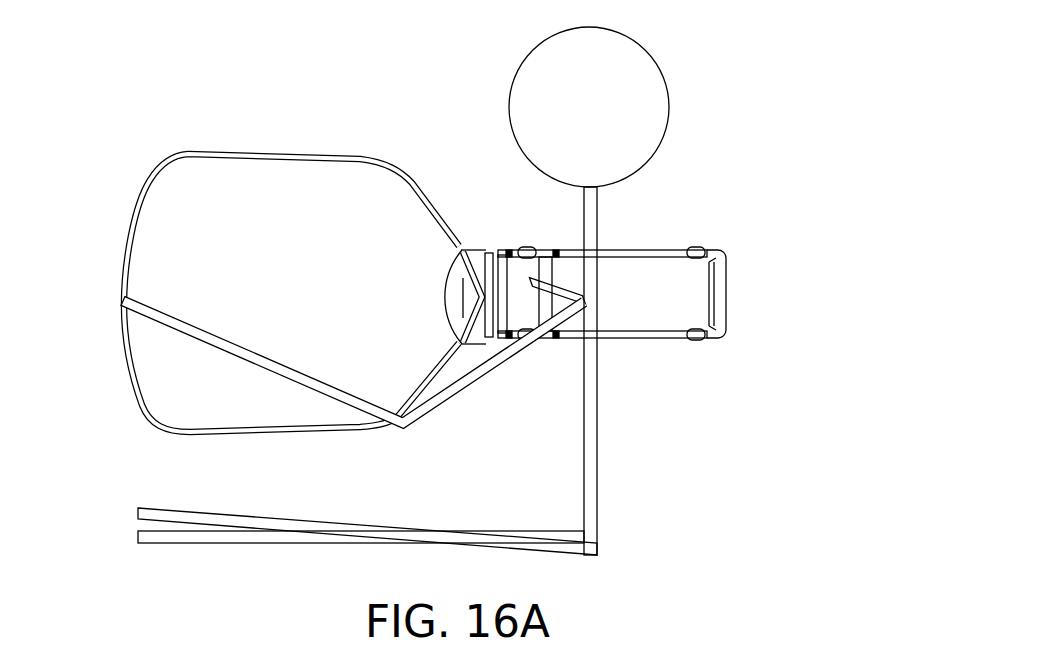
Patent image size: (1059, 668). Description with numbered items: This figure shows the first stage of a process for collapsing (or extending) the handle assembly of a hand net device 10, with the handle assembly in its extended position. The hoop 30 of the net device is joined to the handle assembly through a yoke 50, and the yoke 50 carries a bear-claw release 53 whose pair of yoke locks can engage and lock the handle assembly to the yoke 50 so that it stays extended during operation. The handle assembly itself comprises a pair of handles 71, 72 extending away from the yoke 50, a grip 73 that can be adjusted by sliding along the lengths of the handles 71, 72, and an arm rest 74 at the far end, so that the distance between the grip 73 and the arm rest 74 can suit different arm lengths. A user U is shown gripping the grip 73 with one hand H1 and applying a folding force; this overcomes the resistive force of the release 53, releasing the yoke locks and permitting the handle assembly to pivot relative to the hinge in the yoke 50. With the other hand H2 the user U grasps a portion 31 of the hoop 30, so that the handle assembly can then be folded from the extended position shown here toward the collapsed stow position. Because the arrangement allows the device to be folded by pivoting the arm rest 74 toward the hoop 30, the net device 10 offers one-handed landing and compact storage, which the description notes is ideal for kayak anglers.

The hand net device 10 is at (308, 260).
The hoop 30 is at (302, 157).
The portion of the hoop 31 is at (128, 277).
The yoke 50 is at (460, 297).
The bear-claw release 53 is at (503, 284).
The handle 71 is at (641, 254).
The handle 72 is at (648, 338).
The grip 73 is at (548, 338).
The arm rest 74 is at (718, 303).
The one hand H1 is at (534, 276).
The other hand H2 is at (138, 307).
The user U is at (704, 91).